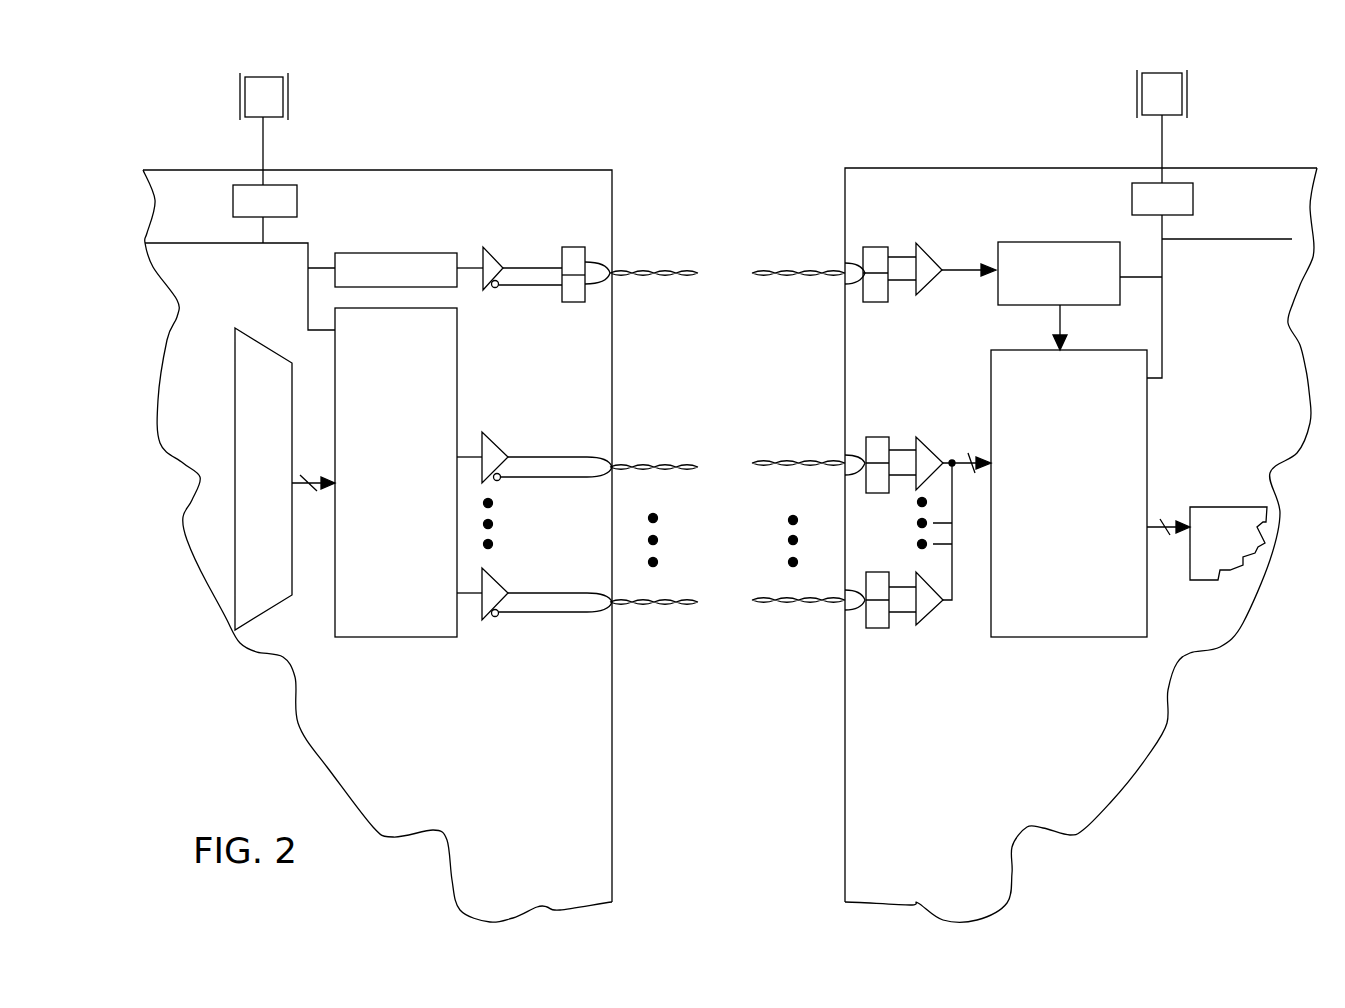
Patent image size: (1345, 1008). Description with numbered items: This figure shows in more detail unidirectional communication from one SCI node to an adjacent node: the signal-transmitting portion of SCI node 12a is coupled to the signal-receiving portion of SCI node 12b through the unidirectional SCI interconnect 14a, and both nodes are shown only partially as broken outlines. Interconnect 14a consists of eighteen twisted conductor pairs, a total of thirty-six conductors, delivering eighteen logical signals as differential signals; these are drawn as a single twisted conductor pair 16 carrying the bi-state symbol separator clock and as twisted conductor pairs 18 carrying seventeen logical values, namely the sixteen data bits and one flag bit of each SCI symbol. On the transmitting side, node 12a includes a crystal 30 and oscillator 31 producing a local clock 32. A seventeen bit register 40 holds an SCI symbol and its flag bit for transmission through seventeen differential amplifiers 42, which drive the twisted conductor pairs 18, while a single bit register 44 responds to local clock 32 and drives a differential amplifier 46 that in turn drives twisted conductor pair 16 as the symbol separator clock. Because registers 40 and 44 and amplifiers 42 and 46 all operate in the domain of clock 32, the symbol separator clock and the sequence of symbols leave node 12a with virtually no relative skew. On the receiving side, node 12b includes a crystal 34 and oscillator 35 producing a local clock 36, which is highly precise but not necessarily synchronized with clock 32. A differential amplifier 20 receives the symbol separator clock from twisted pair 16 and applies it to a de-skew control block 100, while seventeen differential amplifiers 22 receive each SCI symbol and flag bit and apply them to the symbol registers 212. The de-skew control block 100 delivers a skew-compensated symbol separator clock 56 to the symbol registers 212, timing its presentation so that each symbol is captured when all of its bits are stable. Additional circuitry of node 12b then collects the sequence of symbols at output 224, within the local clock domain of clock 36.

The SCI node 12a is at (325, 170).
The SCI node 12b is at (1103, 168).
The unidirectional SCI interconnect 14a is at (724, 210).
The twisted conductor pair 16 is at (782, 270).
The twisted conductor pairs 18 is at (669, 452).
The differential amplifier 20 is at (930, 260).
The differential amplifiers 22 is at (930, 640).
The crystal 30 is at (288, 113).
The oscillator 31 is at (273, 186).
The local clock 32 is at (218, 243).
The crystal 34 is at (1188, 102).
The oscillator 35 is at (1177, 183).
The local clock 36 is at (1210, 239).
The 17 bit register 40 is at (411, 541).
The differential amplifiers 42 is at (483, 635).
The single bit register 44 is at (360, 253).
The differential amplifier 46 is at (493, 252).
The skew-compensated symbol separator clock 56 is at (1063, 312).
The de-skew control block 100 is at (1013, 242).
The symbol registers 212 is at (1083, 512).
The output 224 is at (1153, 522).